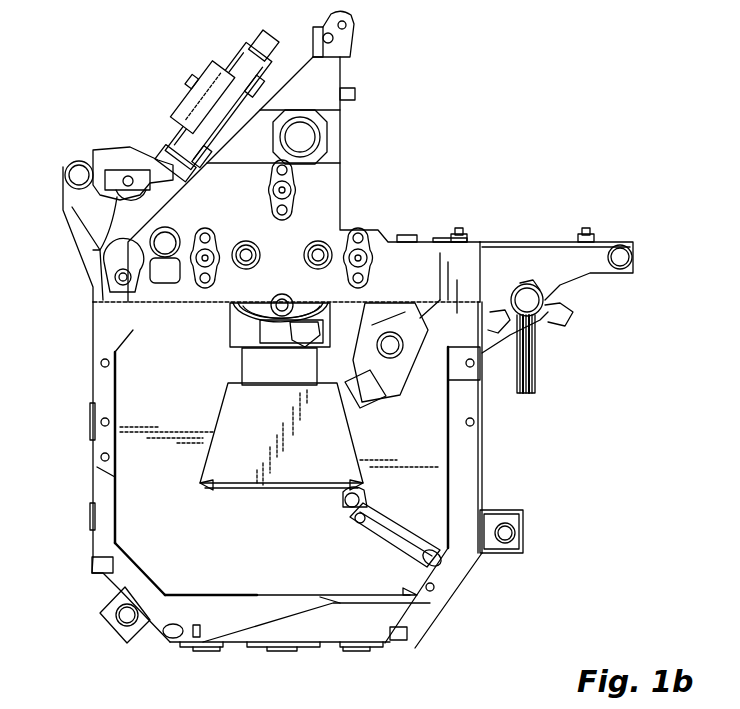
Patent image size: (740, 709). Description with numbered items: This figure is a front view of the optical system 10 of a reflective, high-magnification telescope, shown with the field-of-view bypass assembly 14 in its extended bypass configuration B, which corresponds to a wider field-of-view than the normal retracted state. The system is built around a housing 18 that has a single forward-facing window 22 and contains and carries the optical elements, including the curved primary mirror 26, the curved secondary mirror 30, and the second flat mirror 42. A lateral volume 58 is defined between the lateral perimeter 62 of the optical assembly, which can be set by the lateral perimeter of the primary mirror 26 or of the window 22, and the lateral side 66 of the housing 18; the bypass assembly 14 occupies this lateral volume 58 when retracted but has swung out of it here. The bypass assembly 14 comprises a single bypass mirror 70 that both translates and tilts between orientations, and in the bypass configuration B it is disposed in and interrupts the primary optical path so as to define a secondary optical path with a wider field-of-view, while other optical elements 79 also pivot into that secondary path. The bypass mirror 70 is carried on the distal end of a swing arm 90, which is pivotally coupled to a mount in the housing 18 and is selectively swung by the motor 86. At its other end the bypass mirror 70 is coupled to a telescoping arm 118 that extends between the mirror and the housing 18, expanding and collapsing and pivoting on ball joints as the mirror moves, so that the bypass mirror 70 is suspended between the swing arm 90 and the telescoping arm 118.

The optical system 10 is at (465, 570).
The field-of-view bypass assembly 14 is at (360, 447).
The housing 18 is at (107, 382).
The window 22 is at (115, 485).
The primary mirror 26 is at (162, 512).
The secondary mirror 30 is at (312, 317).
The second flat mirror 42 is at (237, 123).
The lateral volume 58 is at (462, 422).
The lateral perimeter 62 is at (450, 403).
The lateral side 66 is at (490, 513).
The bypass mirror 70 is at (227, 475).
The other optical elements 79 is at (265, 362).
The motor 86 is at (523, 293).
The swing arm 90 is at (368, 373).
The telescoping arm 118 is at (391, 537).
The bypass configuration B is at (360, 478).